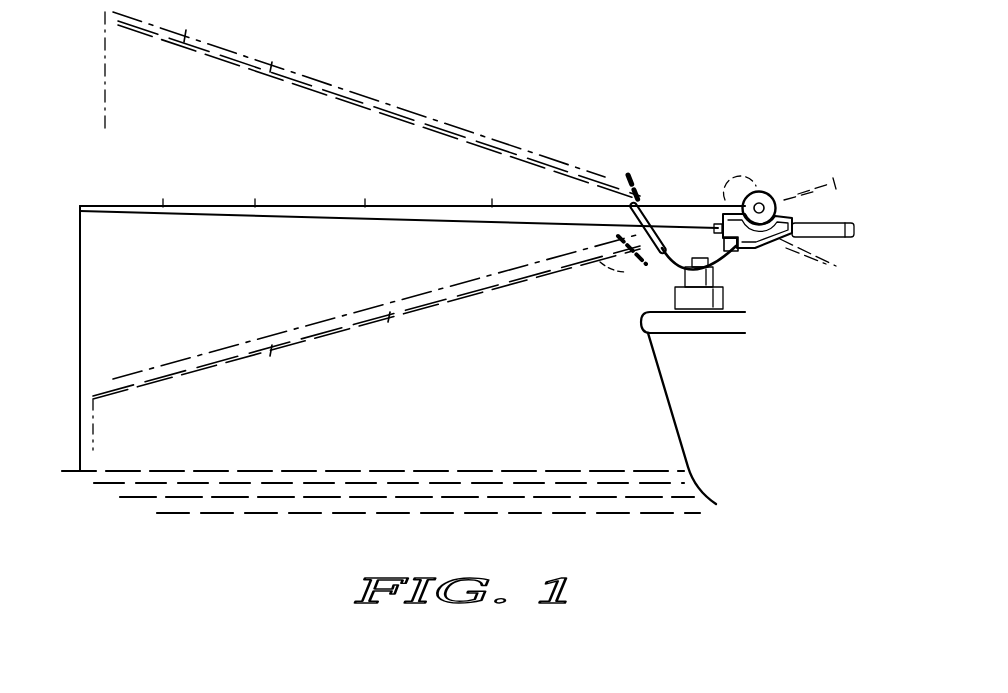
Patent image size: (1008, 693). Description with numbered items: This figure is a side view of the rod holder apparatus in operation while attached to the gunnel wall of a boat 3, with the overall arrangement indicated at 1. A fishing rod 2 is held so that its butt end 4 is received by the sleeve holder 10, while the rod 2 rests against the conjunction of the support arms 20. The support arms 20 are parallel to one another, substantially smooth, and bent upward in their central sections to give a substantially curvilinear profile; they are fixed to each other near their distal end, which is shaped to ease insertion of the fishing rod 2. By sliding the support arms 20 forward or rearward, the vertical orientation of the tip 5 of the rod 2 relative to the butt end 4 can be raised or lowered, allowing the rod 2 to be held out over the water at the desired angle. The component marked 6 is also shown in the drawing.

The fishing rod holder assembly 1 is at (775, 168).
The fishing rod 2 is at (382, 226).
The boat 3 is at (665, 397).
The butt end 4 is at (854, 222).
The tip 5 is at (86, 212).
The clamp 6 is at (652, 232).
The sleeve holder 10 is at (782, 252).
The support arms 20 is at (660, 252).